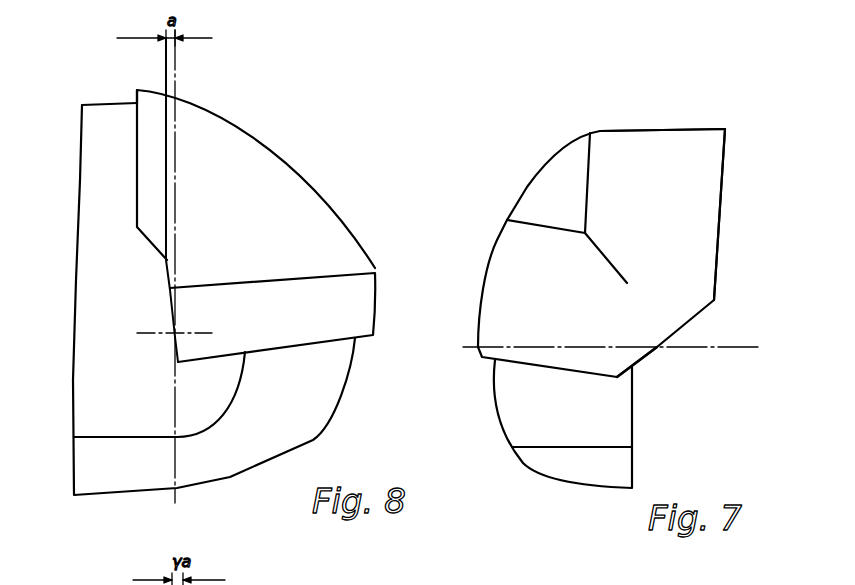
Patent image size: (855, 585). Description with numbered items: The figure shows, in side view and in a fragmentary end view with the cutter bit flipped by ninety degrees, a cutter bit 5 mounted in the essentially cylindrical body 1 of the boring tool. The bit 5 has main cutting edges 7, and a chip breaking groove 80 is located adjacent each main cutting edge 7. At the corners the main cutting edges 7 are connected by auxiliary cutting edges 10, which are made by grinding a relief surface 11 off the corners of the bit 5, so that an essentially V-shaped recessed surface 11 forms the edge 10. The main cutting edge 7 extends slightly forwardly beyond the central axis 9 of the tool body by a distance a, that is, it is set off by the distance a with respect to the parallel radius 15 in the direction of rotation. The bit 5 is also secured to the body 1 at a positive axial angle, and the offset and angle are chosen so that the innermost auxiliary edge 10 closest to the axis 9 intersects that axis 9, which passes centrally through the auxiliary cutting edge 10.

In FIG. 8, the cylindrical body 1 is at (262, 435).
In FIG. 7, the cylindrical body 1 is at (578, 429).
In FIG. 8, the cutter bit 5 is at (297, 232).
In FIG. 7, the cutter bit 5 is at (562, 167).
In FIG. 8, the main cutting edge 7 is at (167, 163).
In FIG. 7, the main cutting edge 7 is at (720, 236).
In FIG. 7, the central axis 9 is at (748, 352).
In FIG. 8, the auxiliary cutting edge 10 is at (170, 305).
In FIG. 7, the auxiliary cutting edge 10 is at (657, 348).
In FIG. 8, the relief surface 11 is at (338, 300).
In FIG. 8, the parallel radius 15 is at (177, 82).
In FIG. 7, the chip breaking groove 80 is at (695, 152).